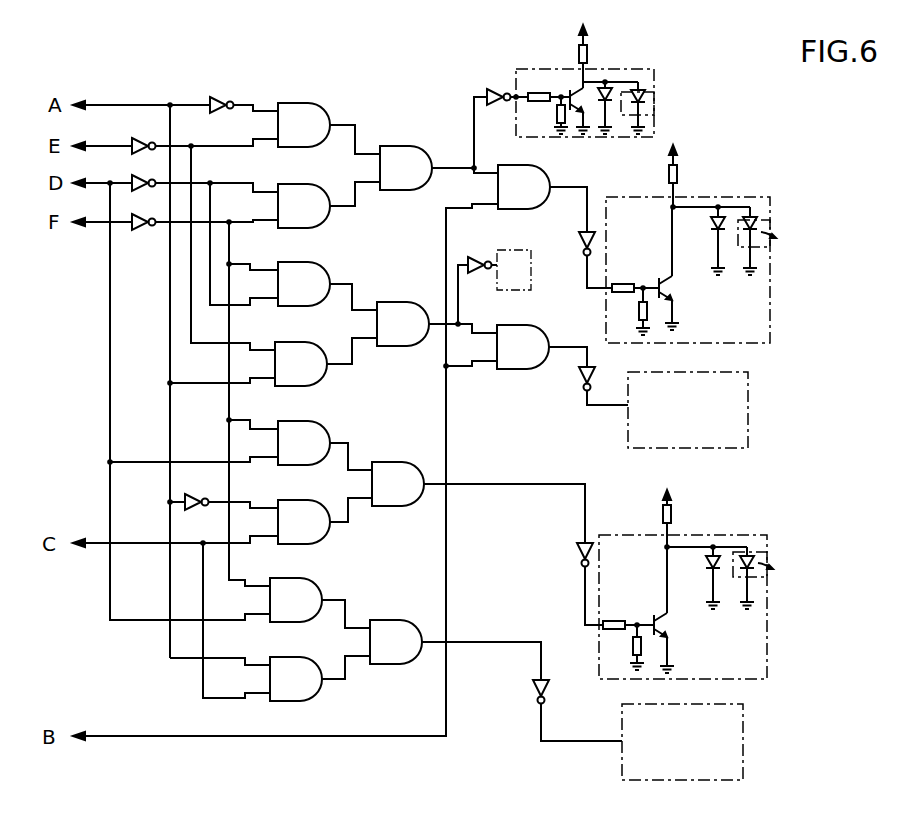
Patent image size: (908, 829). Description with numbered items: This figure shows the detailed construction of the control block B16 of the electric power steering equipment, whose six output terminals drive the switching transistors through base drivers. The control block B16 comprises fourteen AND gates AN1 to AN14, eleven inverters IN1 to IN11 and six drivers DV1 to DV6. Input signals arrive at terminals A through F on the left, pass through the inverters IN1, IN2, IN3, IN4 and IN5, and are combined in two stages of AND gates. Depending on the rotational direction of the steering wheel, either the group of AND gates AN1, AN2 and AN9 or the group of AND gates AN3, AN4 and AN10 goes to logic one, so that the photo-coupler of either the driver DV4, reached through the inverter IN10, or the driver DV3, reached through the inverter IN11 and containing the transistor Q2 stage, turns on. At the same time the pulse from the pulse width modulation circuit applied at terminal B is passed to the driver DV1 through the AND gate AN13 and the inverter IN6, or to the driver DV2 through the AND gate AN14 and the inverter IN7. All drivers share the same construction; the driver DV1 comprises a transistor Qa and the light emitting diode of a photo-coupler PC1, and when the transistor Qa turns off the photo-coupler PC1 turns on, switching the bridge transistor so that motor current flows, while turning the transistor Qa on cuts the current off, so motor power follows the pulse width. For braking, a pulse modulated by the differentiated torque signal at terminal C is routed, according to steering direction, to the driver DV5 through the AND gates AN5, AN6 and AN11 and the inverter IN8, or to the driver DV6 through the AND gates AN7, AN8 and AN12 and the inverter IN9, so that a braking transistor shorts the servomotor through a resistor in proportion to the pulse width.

The control block B16 is at (382, 101).
The AND gate AN1 is at (296, 102).
The AND gate AN2 is at (295, 184).
The AND gate AN3 is at (294, 262).
The AND gate AN4 is at (293, 342).
The AND gate AN5 is at (295, 421).
The AND gate AN6 is at (295, 500).
The AND gate AN7 is at (293, 578).
The AND gate AN8 is at (291, 657).
The AND gate AN9 is at (400, 146).
The AND gate AN10 is at (400, 302).
The AND gate AN11 is at (394, 462).
The AND gate AN12 is at (390, 620).
The AND gate AN13 is at (520, 165).
The AND gate AN14 is at (513, 325).
The inverter IN1 is at (214, 96).
The inverter IN2 is at (144, 139).
The inverter IN3 is at (144, 176).
The inverter IN4 is at (144, 215).
The inverter IN5 is at (194, 495).
The inverter IN6 is at (581, 239).
The inverter IN7 is at (581, 376).
The inverter IN8 is at (576, 557).
The inverter IN9 is at (547, 678).
The inverter IN10 is at (490, 88).
The inverter IN11 is at (476, 254).
The driver DV1 is at (719, 232).
The driver DV2 is at (724, 372).
The driver DV3 is at (530, 253).
The driver DV4 is at (642, 68).
The driver DV5 is at (748, 535).
The driver DV6 is at (740, 704).
The switching transistor Q2 is at (522, 236).
The transistor Qa is at (667, 289).
The photo-coupler PC1 is at (745, 263).